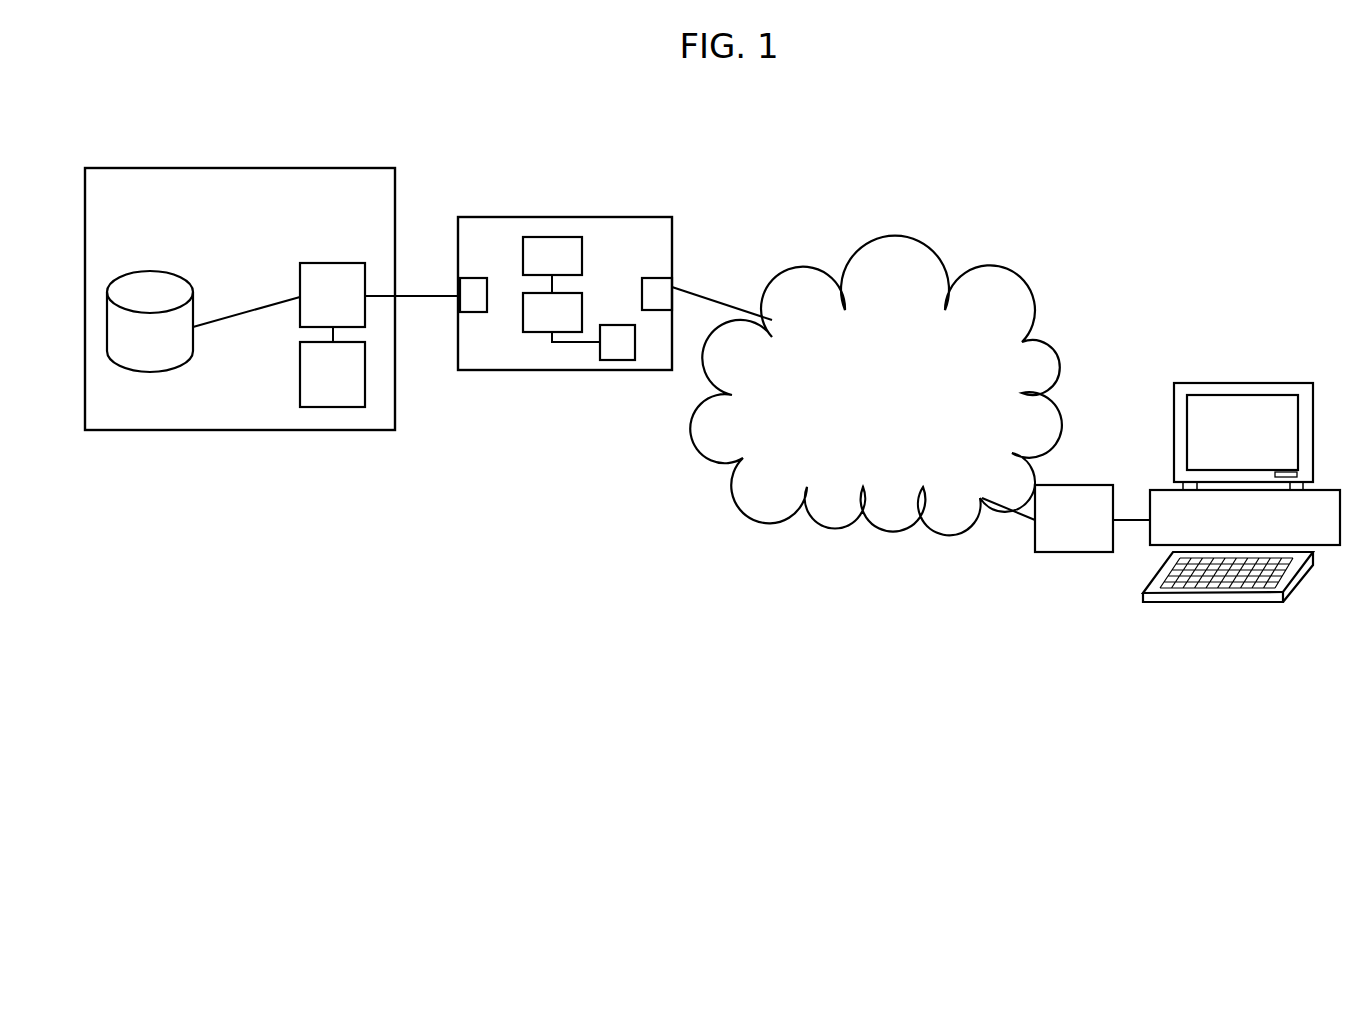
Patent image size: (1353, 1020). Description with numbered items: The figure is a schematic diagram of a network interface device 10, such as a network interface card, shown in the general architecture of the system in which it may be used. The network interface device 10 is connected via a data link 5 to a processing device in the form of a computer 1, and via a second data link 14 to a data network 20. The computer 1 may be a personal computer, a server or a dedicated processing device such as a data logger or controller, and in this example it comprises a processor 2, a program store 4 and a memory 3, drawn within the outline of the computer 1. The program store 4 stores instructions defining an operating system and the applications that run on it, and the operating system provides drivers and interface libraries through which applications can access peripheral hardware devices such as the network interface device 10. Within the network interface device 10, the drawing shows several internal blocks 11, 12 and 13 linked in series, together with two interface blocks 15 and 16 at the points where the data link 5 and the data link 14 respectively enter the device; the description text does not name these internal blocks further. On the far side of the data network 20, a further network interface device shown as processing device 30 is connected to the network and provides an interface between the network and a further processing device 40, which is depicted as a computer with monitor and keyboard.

The computer 1 is at (242, 430).
The processor 2 is at (332, 263).
The memory 3 is at (300, 372).
The program store 4 is at (148, 288).
The data link 5 is at (423, 294).
The network interface device 10 is at (480, 370).
The processor module 11 is at (552, 237).
The memory module 12 is at (535, 332).
The storage module 13 is at (618, 360).
The data link 14 is at (723, 300).
The interface 15 is at (472, 278).
The network interface 16 is at (655, 278).
The data network 20 is at (870, 507).
The processing device 30 is at (1072, 552).
The processing device 40 is at (1218, 614).